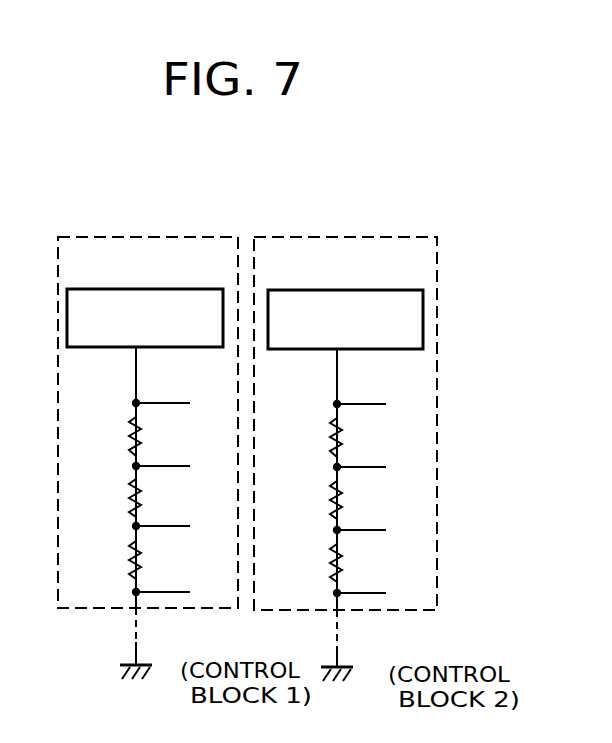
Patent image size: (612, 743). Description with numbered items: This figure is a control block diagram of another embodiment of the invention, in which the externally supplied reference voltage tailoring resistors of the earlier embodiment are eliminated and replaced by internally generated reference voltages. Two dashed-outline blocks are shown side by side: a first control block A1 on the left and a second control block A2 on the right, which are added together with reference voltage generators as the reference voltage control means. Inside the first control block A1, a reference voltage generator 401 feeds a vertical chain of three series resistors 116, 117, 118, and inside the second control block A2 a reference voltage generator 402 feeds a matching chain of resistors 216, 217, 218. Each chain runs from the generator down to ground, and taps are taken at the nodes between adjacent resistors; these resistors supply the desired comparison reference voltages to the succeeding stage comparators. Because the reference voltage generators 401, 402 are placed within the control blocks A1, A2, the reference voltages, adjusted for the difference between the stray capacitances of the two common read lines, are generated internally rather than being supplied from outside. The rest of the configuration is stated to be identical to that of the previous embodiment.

The reference voltage generator 401 is at (188, 289).
The reference voltage generator 402 is at (386, 289).
The resistor 116 is at (147, 438).
The resistor 117 is at (147, 499).
The resistor 118 is at (147, 561).
The resistor 216 is at (346, 439).
The resistor 217 is at (346, 502).
The resistor 218 is at (346, 565).
The control block 1 A1 is at (110, 608).
The control block 2 A2 is at (437, 610).